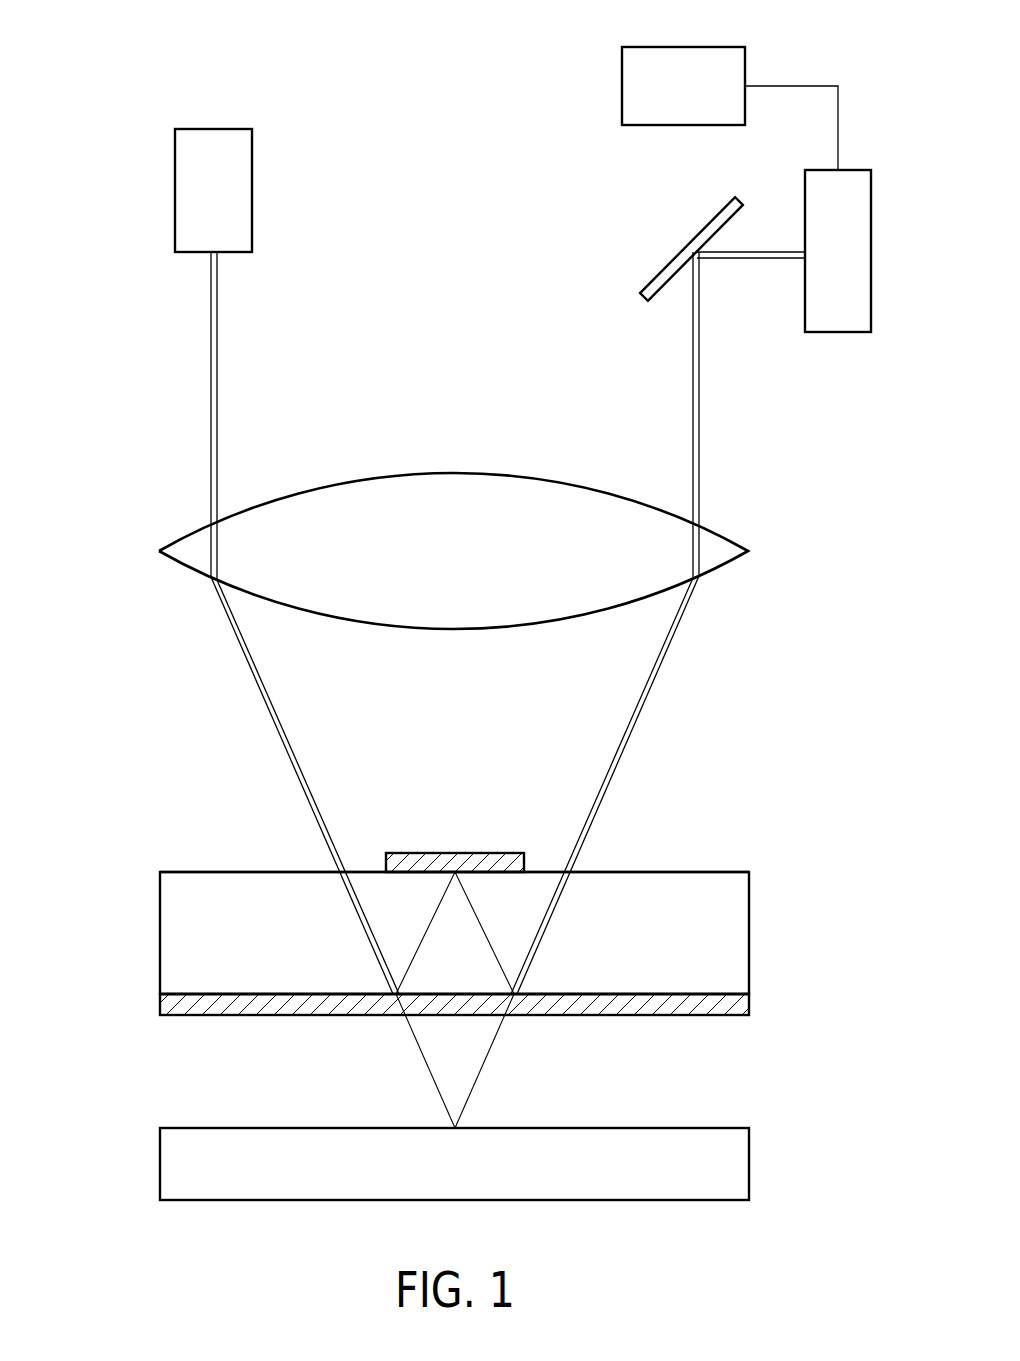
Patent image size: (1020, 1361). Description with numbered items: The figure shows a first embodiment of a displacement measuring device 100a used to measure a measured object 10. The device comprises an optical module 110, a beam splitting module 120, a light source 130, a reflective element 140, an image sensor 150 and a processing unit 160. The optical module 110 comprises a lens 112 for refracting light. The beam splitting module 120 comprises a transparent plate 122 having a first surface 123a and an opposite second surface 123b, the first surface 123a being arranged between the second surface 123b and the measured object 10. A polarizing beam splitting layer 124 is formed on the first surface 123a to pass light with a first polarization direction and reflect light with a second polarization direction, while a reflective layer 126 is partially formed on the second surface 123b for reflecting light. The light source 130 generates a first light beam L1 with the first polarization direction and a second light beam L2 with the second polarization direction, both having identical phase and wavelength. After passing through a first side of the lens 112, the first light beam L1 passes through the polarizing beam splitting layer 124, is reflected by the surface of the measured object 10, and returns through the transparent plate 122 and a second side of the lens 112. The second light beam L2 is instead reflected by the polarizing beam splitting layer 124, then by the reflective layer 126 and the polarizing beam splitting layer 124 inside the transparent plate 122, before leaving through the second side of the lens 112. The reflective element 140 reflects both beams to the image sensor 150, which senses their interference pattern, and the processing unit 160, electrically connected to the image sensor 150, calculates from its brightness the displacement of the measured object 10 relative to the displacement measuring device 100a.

The displacement measuring device 100a is at (158, 82).
The measured object 10 is at (467, 1181).
The optical module 110 is at (410, 756).
The lens 112 is at (456, 472).
The beam splitting module 120 is at (449, 923).
The transparent plate 122 is at (170, 939).
The first surface 123a is at (722, 988).
The second surface 123b is at (720, 862).
The polarizing beam splitting layer 124 is at (267, 1005).
The reflective layer 126 is at (452, 853).
The light source 130 is at (232, 207).
The reflective element 140 is at (675, 260).
The image sensor 150 is at (858, 269).
The processing unit 160 is at (702, 104).
The first light beam L1 is at (205, 385).
The second light beam L2 is at (222, 385).